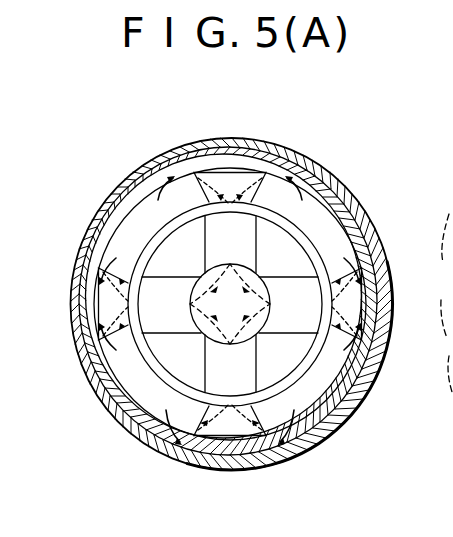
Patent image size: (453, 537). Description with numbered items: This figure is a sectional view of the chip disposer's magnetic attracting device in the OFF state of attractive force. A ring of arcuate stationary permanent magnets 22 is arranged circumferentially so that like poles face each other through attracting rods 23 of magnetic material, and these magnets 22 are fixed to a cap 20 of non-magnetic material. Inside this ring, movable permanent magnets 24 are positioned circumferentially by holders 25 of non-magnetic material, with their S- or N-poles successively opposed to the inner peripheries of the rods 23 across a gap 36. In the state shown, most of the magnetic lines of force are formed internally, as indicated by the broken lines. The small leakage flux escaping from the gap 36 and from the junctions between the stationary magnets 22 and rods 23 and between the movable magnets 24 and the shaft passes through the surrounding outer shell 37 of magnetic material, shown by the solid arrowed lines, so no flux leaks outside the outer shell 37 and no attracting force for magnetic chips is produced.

The cap 20 is at (306, 443).
The stationary permanent magnets 22 is at (348, 397).
The attracting rods 23 is at (236, 428).
The movable permanent magnets 24 is at (300, 328).
The holders 25 is at (168, 263).
The gap 36 is at (305, 247).
The outer shell 37 is at (160, 432).